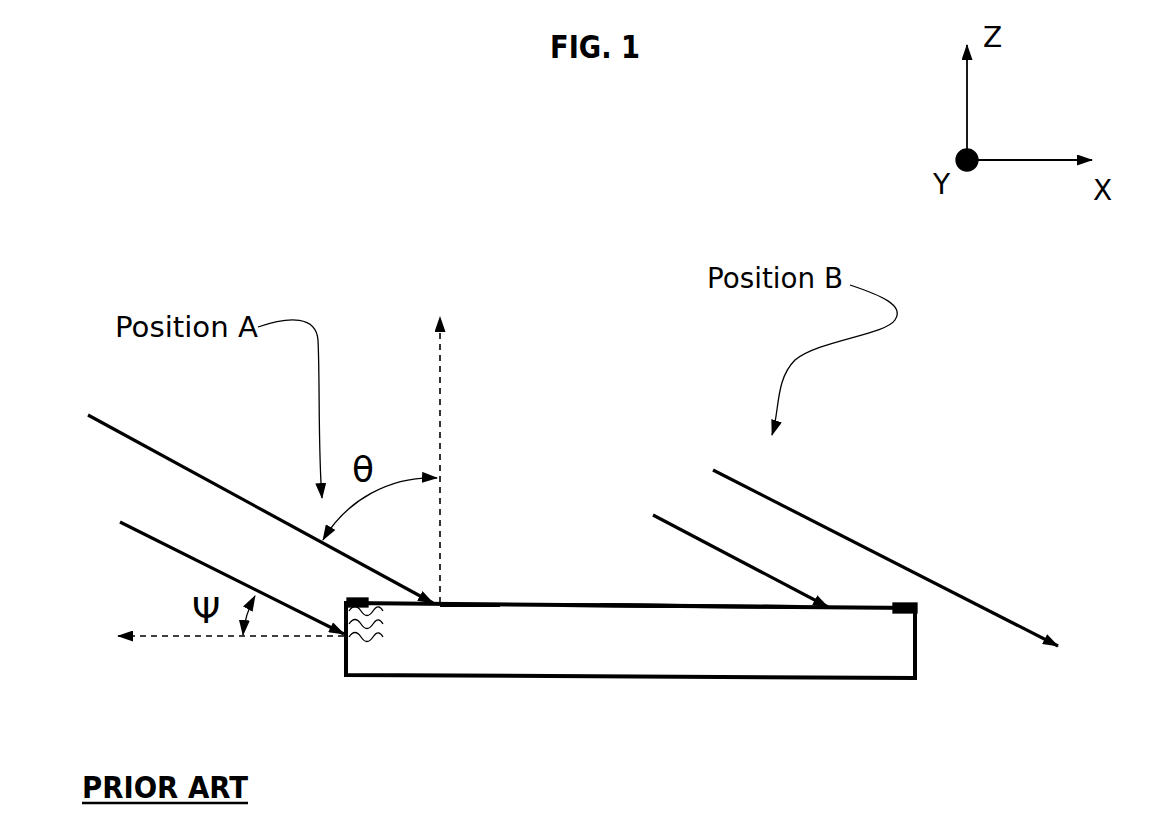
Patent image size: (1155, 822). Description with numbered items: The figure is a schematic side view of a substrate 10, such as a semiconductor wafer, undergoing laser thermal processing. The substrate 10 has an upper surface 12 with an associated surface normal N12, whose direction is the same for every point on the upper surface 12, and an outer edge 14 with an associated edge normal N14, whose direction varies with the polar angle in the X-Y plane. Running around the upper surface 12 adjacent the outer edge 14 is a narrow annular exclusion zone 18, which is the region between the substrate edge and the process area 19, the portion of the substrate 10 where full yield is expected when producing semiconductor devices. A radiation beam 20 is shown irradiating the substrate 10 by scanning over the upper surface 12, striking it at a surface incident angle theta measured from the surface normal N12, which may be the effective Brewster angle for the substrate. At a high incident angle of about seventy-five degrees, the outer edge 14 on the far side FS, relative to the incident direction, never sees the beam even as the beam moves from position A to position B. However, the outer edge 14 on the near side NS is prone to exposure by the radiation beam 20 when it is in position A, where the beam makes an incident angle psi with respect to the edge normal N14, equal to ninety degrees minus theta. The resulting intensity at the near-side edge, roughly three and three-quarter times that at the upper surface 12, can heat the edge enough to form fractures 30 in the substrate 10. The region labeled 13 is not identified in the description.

The substrate 10 is at (647, 658).
The upper surface 12 is at (677, 607).
The top surface region 13 is at (618, 592).
The outer edge 14 is at (343, 665).
The annular exclusion zone 18 is at (353, 597).
The process area 19 is at (473, 580).
The radiation beam 20 is at (155, 487).
The fractures 30 is at (393, 643).
The surface normal N12 is at (440, 387).
The edge normal N14 is at (165, 635).
The near side NS is at (197, 662).
The far side FS is at (927, 633).